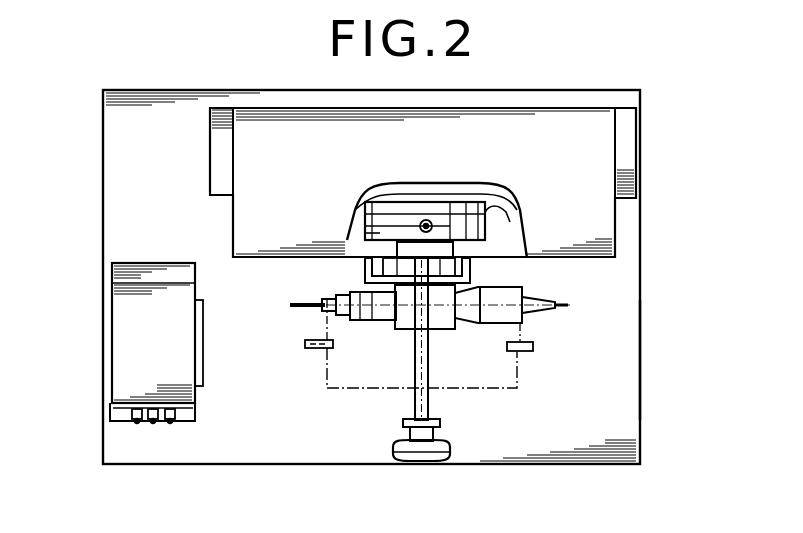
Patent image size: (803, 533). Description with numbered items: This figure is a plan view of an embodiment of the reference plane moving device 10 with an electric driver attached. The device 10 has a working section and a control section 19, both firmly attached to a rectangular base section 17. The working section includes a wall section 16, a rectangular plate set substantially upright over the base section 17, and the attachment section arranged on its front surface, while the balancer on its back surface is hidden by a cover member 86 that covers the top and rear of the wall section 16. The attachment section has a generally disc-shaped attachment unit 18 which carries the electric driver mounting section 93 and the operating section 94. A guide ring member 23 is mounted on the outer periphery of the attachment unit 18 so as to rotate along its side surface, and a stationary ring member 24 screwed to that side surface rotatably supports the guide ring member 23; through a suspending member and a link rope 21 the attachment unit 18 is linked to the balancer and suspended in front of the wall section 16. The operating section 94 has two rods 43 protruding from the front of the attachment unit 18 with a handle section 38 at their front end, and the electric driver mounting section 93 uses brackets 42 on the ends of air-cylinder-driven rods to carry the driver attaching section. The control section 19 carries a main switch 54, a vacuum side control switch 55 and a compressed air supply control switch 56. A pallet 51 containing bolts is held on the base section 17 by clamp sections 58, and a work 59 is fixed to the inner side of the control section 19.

The reference plane moving device 10 is at (96, 141).
The wall section 16 is at (383, 200).
The base section 17 is at (631, 352).
The attachment unit 18 is at (470, 206).
The control section 19 is at (110, 318).
The link rope 21 is at (428, 218).
The guide ring member 23 is at (366, 226).
The stationary ring member 24 is at (368, 230).
The handle section 38 is at (422, 465).
The brackets 42 is at (372, 271).
The rods 43 is at (416, 400).
The pallet 51 is at (343, 368).
The main switch 54 is at (137, 424).
The vacuum side control switch 55 is at (153, 424).
The compressed air supply control switch 56 is at (170, 424).
The clamp sections 58 is at (318, 350).
The work 59 is at (200, 351).
The cover member 86 is at (586, 138).
The electric driver mounting section 93 is at (618, 215).
The operating section 94 is at (450, 407).